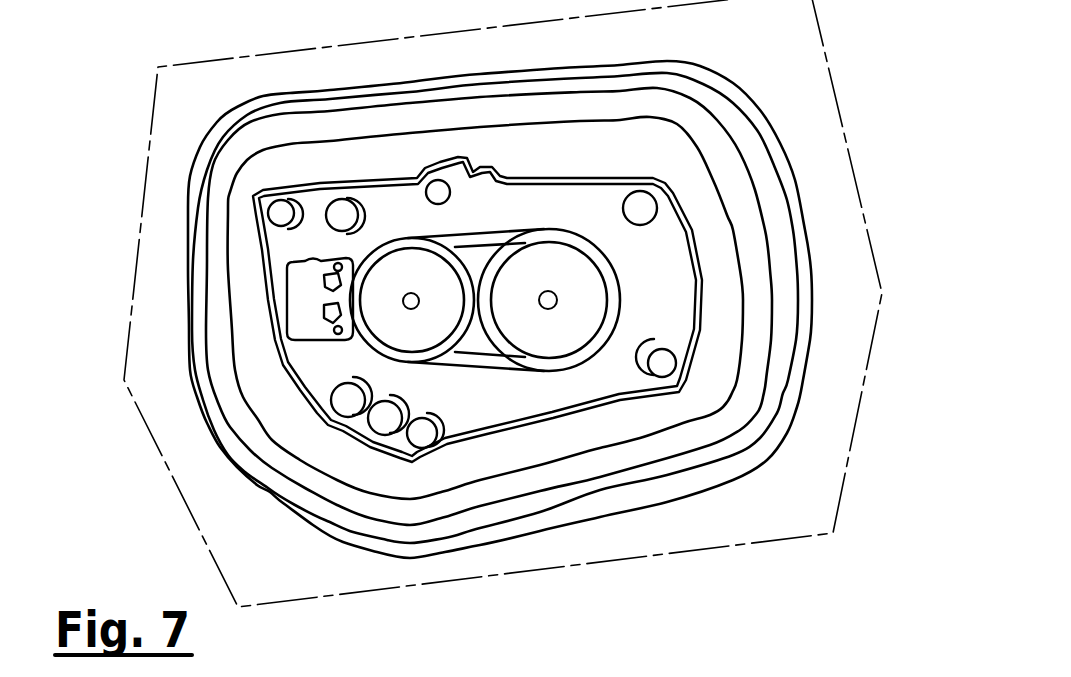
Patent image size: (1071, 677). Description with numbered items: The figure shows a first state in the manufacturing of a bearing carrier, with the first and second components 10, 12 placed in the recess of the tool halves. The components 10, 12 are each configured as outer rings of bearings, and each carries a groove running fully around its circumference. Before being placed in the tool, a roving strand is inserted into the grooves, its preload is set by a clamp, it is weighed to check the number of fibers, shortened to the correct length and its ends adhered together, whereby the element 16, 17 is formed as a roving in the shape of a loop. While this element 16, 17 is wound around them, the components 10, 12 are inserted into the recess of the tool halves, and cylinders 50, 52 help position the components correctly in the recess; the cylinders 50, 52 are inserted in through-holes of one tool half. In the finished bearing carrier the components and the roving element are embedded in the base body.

The first component 10 is at (353, 298).
The second component 12 is at (603, 258).
The element 16 is at (473, 360).
The second shaft 17 is at (601, 454).
The cylinder 50 is at (377, 322).
The cylinder 52 is at (587, 310).